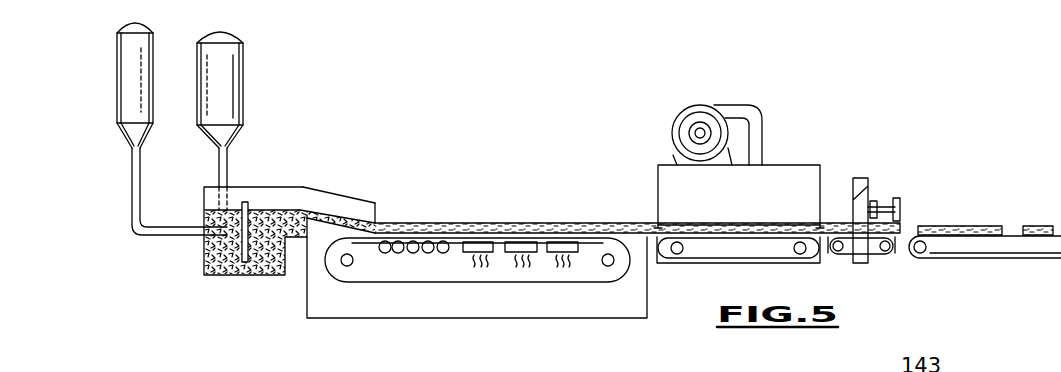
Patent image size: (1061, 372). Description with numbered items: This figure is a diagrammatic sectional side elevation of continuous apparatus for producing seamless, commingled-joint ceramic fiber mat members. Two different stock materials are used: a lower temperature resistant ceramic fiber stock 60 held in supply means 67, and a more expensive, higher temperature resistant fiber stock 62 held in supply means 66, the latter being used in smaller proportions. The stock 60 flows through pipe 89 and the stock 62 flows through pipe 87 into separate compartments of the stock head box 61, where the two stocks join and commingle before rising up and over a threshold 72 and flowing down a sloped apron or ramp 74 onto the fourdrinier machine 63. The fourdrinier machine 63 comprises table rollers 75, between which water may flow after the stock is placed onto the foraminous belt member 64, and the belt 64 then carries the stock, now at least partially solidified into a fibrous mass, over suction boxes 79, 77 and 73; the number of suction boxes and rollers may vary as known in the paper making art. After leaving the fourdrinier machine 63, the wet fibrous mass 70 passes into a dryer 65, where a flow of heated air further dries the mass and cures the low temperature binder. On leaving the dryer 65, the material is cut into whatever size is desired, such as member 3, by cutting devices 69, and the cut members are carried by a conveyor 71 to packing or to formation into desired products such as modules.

The stock material 60 is at (130, 85).
The supply means 67 is at (118, 33).
The stock material 62 is at (250, 88).
The supply means 66 is at (245, 44).
The pipe 89 is at (132, 195).
The pipe 87 is at (228, 168).
The stock head box 61 is at (300, 190).
The threshold 72 is at (338, 212).
The sloped apron or ramp 74 is at (374, 205).
The wet fibrous mass 70 is at (534, 223).
The fourdrinier machine 63 is at (306, 290).
The foraminous belt member 64 is at (378, 284).
The table rollers 75 is at (414, 254).
The suction box 79 is at (490, 253).
The suction box 77 is at (527, 254).
The suction box 73 is at (557, 256).
The dryer 65 is at (787, 166).
The cutting devices 69 is at (861, 178).
The member 3 is at (1032, 222).
The conveyor 71 is at (952, 258).